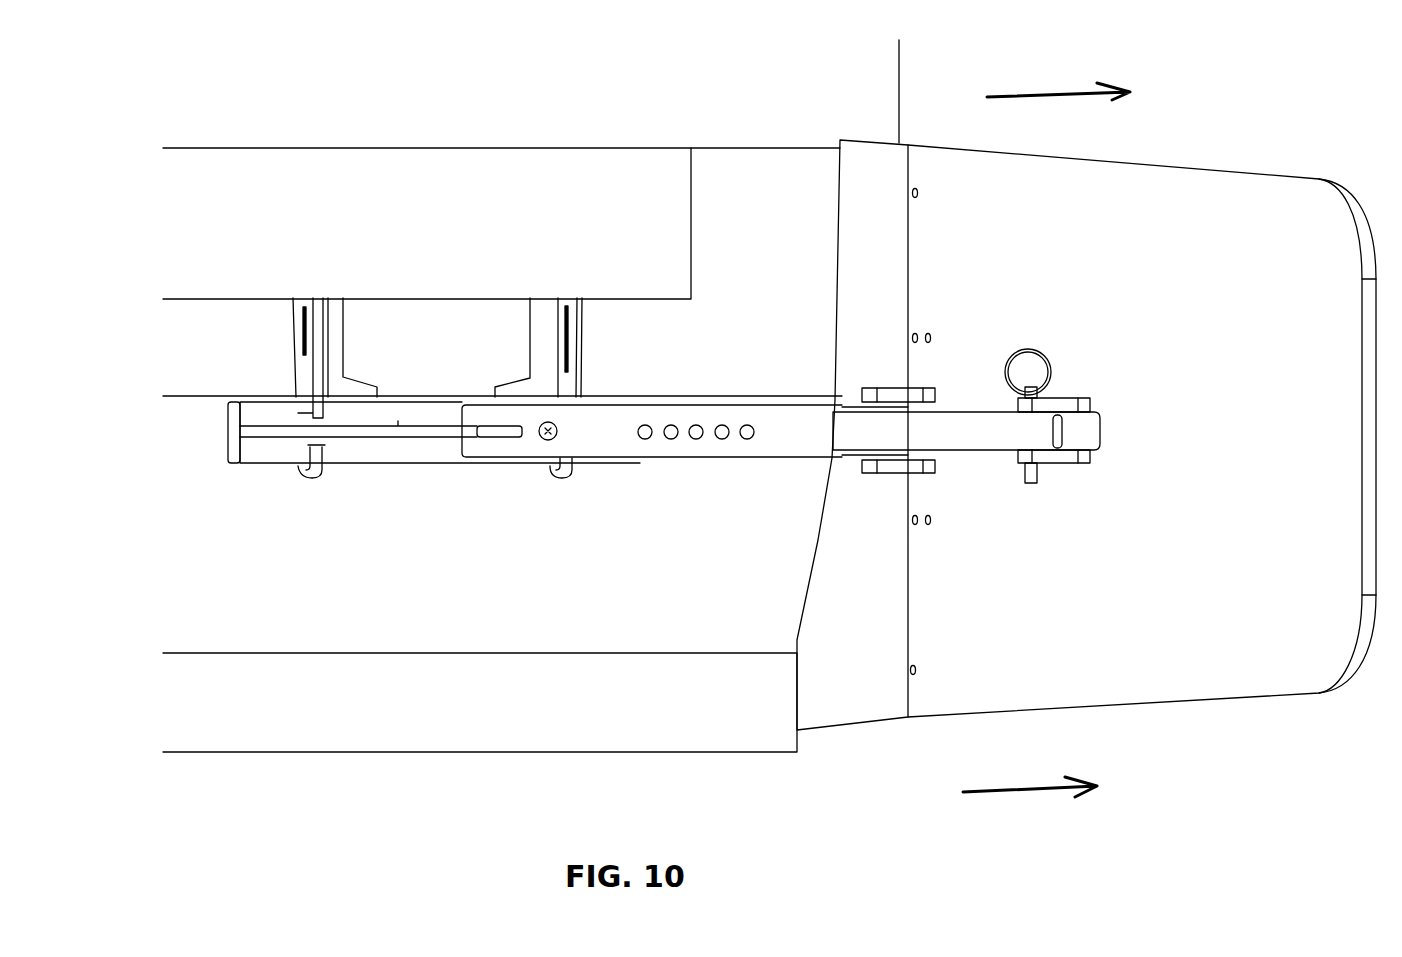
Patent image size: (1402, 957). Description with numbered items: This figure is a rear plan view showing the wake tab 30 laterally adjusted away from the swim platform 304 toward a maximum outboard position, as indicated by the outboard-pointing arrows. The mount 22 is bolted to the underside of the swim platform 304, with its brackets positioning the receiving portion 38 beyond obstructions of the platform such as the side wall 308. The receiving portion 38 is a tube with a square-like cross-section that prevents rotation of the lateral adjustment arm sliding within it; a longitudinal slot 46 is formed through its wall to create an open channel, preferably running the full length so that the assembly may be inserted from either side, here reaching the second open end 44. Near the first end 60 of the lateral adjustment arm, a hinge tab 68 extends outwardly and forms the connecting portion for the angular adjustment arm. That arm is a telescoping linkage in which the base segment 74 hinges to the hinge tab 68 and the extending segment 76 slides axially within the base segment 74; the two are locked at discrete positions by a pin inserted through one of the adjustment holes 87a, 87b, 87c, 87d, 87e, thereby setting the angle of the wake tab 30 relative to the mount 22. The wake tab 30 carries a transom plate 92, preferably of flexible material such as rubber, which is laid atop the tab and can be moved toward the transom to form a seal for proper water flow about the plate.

The swim platform 304 is at (420, 153).
The side wall 308 is at (380, 231).
The mount 22 is at (252, 334).
The longitudinal slot 46 is at (275, 428).
The receiving portion 38 is at (265, 458).
The second open end 44 is at (227, 448).
The first end 60 is at (398, 432).
The hinge tab 68 is at (487, 428).
The base segment 74 is at (570, 445).
The adjustment hole 87a is at (640, 424).
The adjustment hole 87b is at (669, 440).
The adjustment hole 87c is at (696, 424).
The adjustment hole 87d is at (722, 440).
The adjustment hole 87e is at (748, 424).
The extending segment 76 is at (963, 442).
The transom plate 92 is at (868, 607).
The wake tab 30 is at (1207, 251).